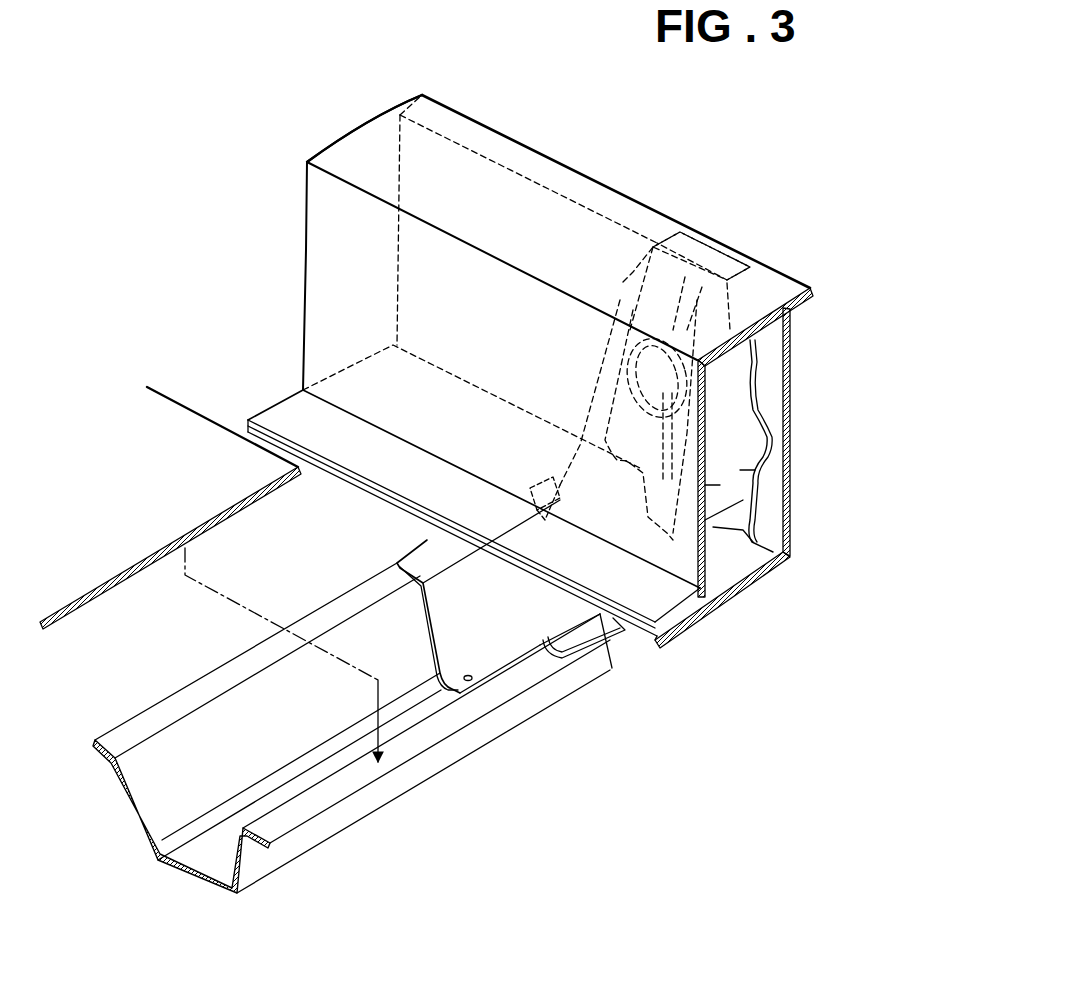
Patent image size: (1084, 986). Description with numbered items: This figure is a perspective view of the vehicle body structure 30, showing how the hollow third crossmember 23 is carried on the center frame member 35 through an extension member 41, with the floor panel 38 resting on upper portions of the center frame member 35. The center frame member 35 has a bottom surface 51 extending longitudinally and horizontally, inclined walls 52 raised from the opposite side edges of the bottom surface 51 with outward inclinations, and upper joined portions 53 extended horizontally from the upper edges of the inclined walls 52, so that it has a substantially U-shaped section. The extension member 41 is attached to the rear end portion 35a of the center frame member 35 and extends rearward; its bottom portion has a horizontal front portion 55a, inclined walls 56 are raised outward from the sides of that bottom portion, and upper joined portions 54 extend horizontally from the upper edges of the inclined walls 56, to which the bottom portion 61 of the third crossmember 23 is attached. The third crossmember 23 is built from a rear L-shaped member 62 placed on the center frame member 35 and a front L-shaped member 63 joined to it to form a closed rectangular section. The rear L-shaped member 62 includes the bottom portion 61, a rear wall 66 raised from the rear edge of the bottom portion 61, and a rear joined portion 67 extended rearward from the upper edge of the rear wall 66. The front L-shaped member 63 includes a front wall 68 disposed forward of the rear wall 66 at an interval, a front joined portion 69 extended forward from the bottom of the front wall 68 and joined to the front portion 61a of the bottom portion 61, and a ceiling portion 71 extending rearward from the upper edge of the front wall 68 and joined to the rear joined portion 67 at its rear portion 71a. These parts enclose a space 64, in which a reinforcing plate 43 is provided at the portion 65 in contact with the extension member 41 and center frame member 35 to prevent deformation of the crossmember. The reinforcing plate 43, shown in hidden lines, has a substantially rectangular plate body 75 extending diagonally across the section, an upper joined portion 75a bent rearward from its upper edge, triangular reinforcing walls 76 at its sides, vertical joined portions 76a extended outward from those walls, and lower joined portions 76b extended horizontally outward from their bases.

The vehicle body structure 30 is at (258, 142).
The third crossmember 23 is at (554, 338).
The front L-shaped member 63 is at (500, 178).
The ceiling portion 71 is at (366, 143).
The rear portion of the ceiling portion 71a is at (445, 120).
The front wall 68 is at (322, 277).
The space 64 is at (388, 262).
The front joined portion 69 is at (292, 413).
The rear joined portion 67 is at (805, 305).
The rear wall 66 is at (790, 385).
The rear L-shaped member 62 is at (793, 455).
The bottom portion 61 is at (760, 573).
The front portion of the bottom portion 61a is at (687, 623).
The reinforcing wall 76 is at (720, 448).
The vertical joined portion 76a is at (623, 280).
The lower joined portion 76b is at (545, 487).
The plate body 75 is at (615, 390).
The upper joined portion 75a is at (700, 258).
The reinforcing plate 43 is at (717, 483).
The portion in contact with the extension member 65 is at (527, 540).
The floor panel 38 is at (168, 415).
The extension member 41 is at (413, 532).
The center frame member 35 is at (353, 760).
The rear end portion 35a is at (575, 680).
The upper joined portion 53 is at (195, 698).
The inclined wall 52 is at (163, 800).
The bottom surface 51 is at (208, 865).
The horizontal front portion 55a is at (510, 654).
The inclined wall 56 is at (450, 610).
The upper joined portion 54 is at (417, 557).